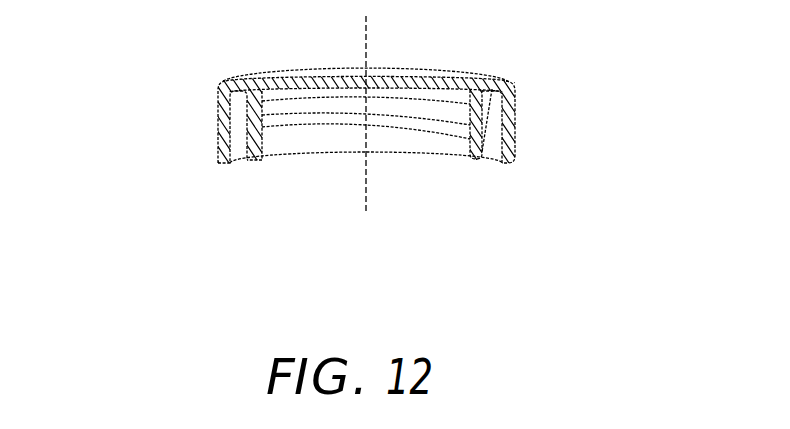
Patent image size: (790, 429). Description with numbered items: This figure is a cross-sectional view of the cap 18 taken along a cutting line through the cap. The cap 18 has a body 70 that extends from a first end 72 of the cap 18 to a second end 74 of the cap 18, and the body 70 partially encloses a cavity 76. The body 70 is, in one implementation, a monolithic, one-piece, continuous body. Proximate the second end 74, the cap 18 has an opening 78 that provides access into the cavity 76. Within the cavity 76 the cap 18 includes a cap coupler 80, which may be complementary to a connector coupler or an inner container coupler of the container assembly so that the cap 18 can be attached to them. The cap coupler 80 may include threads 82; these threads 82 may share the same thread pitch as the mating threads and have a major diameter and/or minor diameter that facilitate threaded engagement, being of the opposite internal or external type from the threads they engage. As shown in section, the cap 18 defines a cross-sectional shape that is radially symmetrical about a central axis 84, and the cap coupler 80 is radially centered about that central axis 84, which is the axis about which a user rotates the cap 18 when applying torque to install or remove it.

The cap 18 is at (552, 107).
The body 70 is at (200, 107).
The first end 72 is at (262, 68).
The second end 74 is at (226, 165).
The cavity 76 is at (445, 140).
The opening 78 is at (287, 155).
The cap coupler 80 is at (335, 128).
The threads 82 is at (400, 128).
The central axis 84 is at (367, 30).